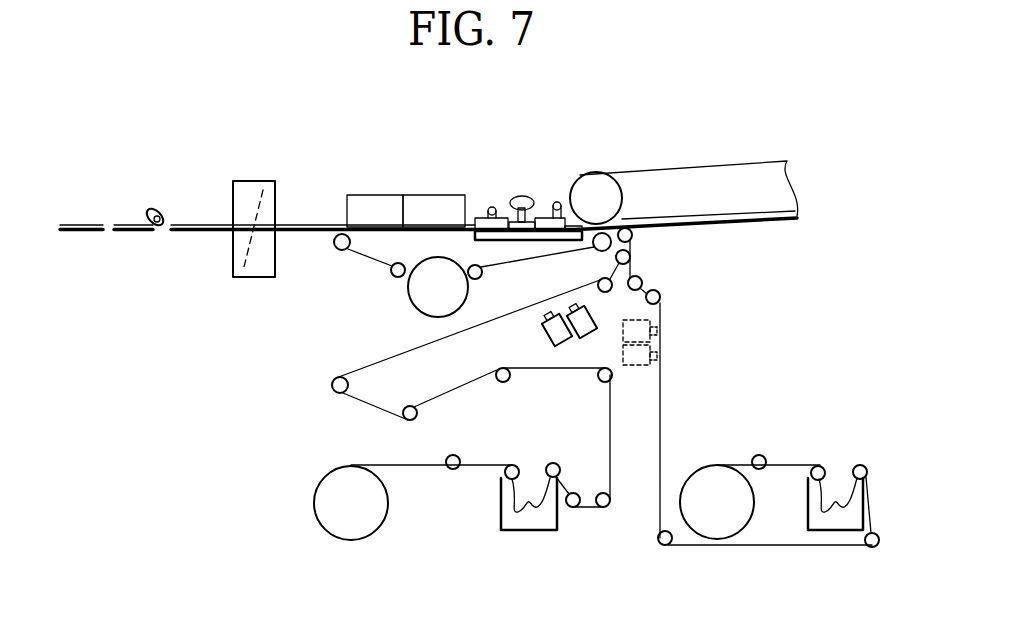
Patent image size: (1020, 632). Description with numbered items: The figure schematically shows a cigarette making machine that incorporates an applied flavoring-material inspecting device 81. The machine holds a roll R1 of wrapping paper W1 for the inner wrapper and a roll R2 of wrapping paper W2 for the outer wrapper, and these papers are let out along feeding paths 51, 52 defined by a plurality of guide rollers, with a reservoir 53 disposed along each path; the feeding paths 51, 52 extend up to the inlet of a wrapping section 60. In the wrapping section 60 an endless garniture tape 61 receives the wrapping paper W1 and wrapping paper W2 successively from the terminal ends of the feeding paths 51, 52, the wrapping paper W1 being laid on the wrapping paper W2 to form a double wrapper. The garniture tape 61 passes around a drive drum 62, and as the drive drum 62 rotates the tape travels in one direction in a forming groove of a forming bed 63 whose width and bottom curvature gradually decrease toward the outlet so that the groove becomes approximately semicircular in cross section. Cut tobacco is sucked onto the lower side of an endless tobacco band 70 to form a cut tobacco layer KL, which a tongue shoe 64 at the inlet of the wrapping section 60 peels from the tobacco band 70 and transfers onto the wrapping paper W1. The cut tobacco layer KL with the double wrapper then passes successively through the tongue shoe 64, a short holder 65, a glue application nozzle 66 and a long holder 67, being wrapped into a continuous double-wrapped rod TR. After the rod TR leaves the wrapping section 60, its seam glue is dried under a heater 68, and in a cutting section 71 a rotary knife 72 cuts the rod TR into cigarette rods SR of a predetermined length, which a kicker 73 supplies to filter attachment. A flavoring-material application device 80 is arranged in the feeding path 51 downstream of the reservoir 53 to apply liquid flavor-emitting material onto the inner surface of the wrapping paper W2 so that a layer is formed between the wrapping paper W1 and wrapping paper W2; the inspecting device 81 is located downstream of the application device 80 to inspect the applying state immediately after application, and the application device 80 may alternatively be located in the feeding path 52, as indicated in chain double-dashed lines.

The cigarette rods SR is at (193, 224).
The kicker 73 is at (155, 209).
The cutting section 71 is at (249, 180).
The rotary knife 72 is at (252, 254).
The heater 68 is at (421, 203).
The double-wrapped rod TR is at (472, 217).
The long holder 67 is at (485, 216).
The glue application nozzle 66 is at (520, 196).
The short holder 65 is at (545, 216).
The tongue shoe 64 is at (573, 190).
The tobacco band 70 is at (704, 172).
The cut tobacco layer KL is at (743, 229).
The wrapping section 60 is at (362, 268).
The garniture tape 61 is at (377, 262).
The drive drum 62 is at (462, 290).
The forming bed 63 is at (538, 242).
The feeding path 52 is at (672, 405).
The feeding path 51 is at (373, 361).
The wrapping paper W1 is at (657, 490).
The wrapping paper W2 is at (402, 464).
The roll R1 is at (708, 480).
The roll R2 is at (349, 532).
The reservoir 53 is at (521, 532).
The flavoring-material application device 80 is at (545, 335).
The applied flavoring-material inspecting device 81 is at (590, 310).